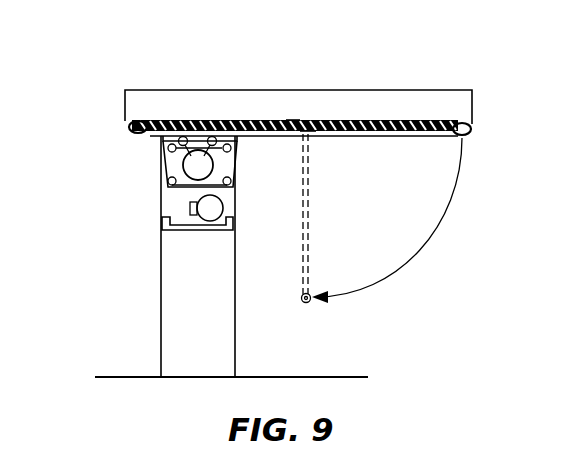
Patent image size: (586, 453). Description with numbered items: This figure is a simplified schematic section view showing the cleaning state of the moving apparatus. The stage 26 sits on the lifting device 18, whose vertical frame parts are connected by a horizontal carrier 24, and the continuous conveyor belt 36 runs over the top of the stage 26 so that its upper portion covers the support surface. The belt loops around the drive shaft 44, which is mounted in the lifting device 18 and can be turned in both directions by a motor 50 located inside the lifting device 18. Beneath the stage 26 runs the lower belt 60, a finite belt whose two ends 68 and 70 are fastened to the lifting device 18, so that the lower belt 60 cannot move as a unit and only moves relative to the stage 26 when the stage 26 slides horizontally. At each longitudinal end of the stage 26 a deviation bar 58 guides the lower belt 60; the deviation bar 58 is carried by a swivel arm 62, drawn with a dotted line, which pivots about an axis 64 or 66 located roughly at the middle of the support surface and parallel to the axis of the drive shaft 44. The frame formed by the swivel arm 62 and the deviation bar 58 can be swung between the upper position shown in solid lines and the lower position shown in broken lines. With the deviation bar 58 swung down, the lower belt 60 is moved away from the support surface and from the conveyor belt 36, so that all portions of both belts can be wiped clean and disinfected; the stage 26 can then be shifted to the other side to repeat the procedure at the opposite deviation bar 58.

The lifting device 18 is at (172, 198).
The horizontal carrier 24 is at (193, 233).
The stage 26 is at (345, 88).
The continuous conveyor belt 36 is at (408, 113).
The drive shaft 44 is at (200, 167).
The motor 50 is at (212, 207).
The deviation bar 58 is at (140, 134).
The lower belt 60 is at (385, 146).
The swivel arm 62 is at (306, 252).
The axis 64 is at (296, 119).
The axis 66 is at (306, 122).
The end 68 is at (161, 140).
The end 70 is at (231, 148).